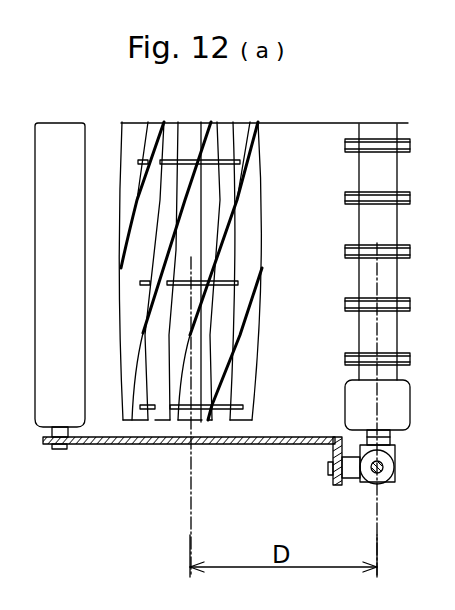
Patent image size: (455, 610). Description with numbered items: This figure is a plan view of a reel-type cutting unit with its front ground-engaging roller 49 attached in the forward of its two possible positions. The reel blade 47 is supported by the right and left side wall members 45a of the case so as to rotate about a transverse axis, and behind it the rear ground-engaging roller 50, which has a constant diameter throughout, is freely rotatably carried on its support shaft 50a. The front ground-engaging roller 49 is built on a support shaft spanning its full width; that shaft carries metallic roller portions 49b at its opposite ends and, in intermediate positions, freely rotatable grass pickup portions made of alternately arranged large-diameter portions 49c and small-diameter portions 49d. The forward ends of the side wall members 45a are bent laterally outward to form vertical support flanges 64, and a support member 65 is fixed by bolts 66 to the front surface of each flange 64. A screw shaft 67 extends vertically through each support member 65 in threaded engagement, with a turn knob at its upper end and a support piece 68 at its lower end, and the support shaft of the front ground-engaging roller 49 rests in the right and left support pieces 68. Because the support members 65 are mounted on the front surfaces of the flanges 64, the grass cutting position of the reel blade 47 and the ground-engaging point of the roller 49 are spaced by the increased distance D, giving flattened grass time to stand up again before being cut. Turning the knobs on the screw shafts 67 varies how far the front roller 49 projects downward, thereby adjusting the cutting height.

The rear ground-engaging roller 50 is at (62, 143).
The support shaft 50a is at (58, 450).
The side wall members 45a is at (143, 446).
The reel blade 47 is at (265, 150).
The front ground-engaging roller 49 is at (357, 266).
The small-diameter portions 49d is at (370, 219).
The large-diameter portions 49c is at (347, 303).
The metallic roller portions 49b is at (350, 408).
The support piece 68 is at (393, 450).
The screw shaft 67 is at (383, 471).
The support member 65 is at (372, 488).
The support flanges 64 is at (340, 458).
The bolts 66 is at (331, 470).